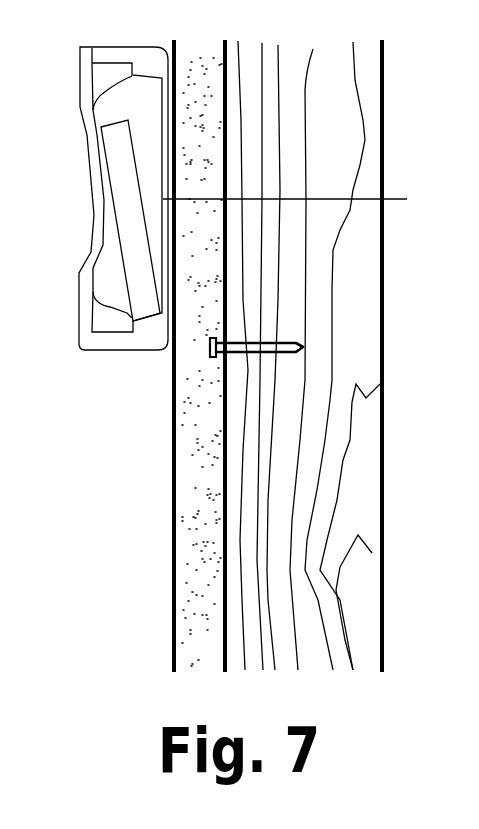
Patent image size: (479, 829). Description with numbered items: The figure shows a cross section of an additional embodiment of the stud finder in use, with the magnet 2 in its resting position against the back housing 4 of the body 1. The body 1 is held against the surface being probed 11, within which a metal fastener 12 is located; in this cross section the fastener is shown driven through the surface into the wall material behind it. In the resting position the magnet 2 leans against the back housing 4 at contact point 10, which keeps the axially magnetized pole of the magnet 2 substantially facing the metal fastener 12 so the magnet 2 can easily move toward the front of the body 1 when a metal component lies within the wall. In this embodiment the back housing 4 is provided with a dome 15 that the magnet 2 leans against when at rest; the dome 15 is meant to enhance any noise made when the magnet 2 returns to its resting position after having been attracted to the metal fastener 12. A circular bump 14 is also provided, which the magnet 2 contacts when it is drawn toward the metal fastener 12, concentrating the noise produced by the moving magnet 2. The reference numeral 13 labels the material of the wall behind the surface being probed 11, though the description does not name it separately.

The body 1 is at (76, 349).
The magnet 2 is at (128, 213).
The back housing 4 is at (93, 82).
The contact point 10 is at (96, 160).
The surface being probed 11 is at (198, 422).
The metal fastener 12 is at (303, 345).
The wall 13 is at (365, 435).
The circular bump 14 is at (298, 204).
The dome 15 is at (98, 230).